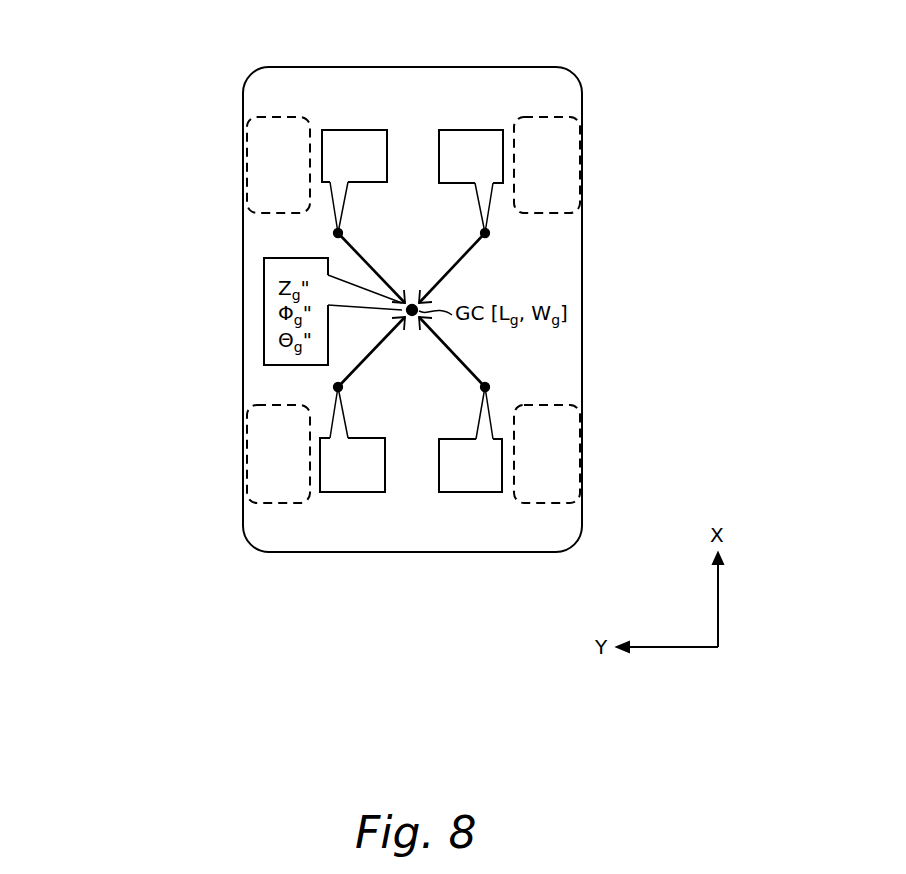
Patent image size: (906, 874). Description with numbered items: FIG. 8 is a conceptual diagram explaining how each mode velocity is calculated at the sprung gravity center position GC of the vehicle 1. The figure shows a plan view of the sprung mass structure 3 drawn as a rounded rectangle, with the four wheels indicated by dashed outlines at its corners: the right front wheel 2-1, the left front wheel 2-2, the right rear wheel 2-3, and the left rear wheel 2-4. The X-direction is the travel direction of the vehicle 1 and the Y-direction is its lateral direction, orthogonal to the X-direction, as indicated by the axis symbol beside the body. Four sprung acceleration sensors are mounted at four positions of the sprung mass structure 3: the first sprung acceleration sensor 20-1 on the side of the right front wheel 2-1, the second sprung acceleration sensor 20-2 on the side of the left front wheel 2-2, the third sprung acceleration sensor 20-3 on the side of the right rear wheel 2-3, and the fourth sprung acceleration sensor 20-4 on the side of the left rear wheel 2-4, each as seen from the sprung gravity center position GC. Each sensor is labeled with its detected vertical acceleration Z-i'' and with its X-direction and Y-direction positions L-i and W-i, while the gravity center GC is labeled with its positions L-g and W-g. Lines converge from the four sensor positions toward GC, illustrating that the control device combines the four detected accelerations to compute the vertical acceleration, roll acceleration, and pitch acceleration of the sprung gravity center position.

The vehicle 1 is at (408, 576).
The sprung mass structure 3 is at (411, 88).
The right front wheel 2-1 is at (581, 167).
The left front wheel 2-2 is at (244, 166).
The right rear wheel 2-3 is at (581, 452).
The left rear wheel 2-4 is at (244, 450).
The first sprung acceleration sensor 20-1 is at (488, 234).
The second sprung acceleration sensor 20-2 is at (336, 234).
The third sprung acceleration sensor 20-3 is at (488, 387).
The fourth sprung acceleration sensor 20-4 is at (336, 387).